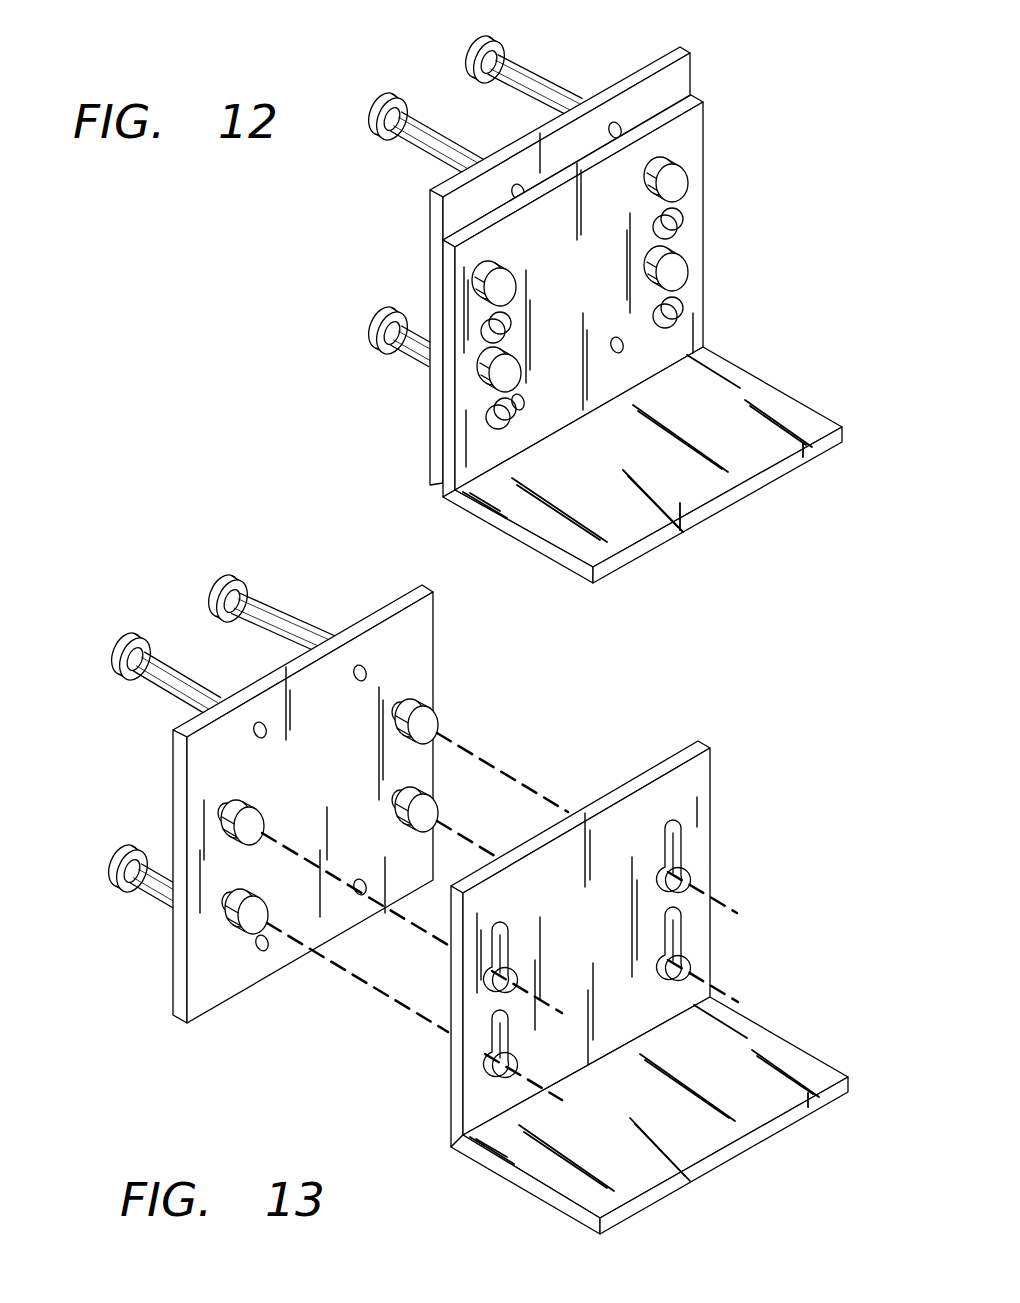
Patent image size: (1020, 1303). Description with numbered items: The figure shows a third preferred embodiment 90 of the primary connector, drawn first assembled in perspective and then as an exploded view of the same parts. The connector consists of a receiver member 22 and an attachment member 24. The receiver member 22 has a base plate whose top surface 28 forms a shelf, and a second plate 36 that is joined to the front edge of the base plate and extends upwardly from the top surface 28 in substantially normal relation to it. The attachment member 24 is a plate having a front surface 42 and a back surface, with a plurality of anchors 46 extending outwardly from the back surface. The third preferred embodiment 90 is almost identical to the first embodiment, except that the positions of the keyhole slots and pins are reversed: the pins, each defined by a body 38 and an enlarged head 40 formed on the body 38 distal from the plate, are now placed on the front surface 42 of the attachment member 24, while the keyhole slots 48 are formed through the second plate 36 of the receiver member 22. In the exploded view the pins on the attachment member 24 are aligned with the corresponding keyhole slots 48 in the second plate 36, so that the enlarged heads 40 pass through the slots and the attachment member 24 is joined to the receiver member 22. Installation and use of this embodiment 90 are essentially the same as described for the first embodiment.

In FIG. 13, the receiver member 22 is at (633, 957).
In FIG. 13, the attachment member 24 is at (300, 771).
In FIG. 12, the top surface 28 is at (683, 457).
In FIG. 13, the top surface 28 is at (758, 1078).
In FIG. 12, the second plate 36 is at (460, 237).
In FIG. 13, the second plate 36 is at (688, 750).
In FIG. 13, the body 38 is at (440, 760).
In FIG. 12, the enlarged head 40 is at (683, 190).
In FIG. 13, the enlarged head 40 is at (432, 726).
In FIG. 12, the front surface 42 is at (680, 72).
In FIG. 13, the front surface 42 is at (422, 638).
In FIG. 12, the anchors 46 is at (547, 92).
In FIG. 13, the anchors 46 is at (280, 624).
In FIG. 12, the keyhole slots 48 is at (683, 348).
In FIG. 13, the keyhole slots 48 is at (705, 984).
In FIG. 12, the third preferred embodiment 90 is at (608, 309).
In FIG. 13, the third preferred embodiment 90 is at (472, 877).